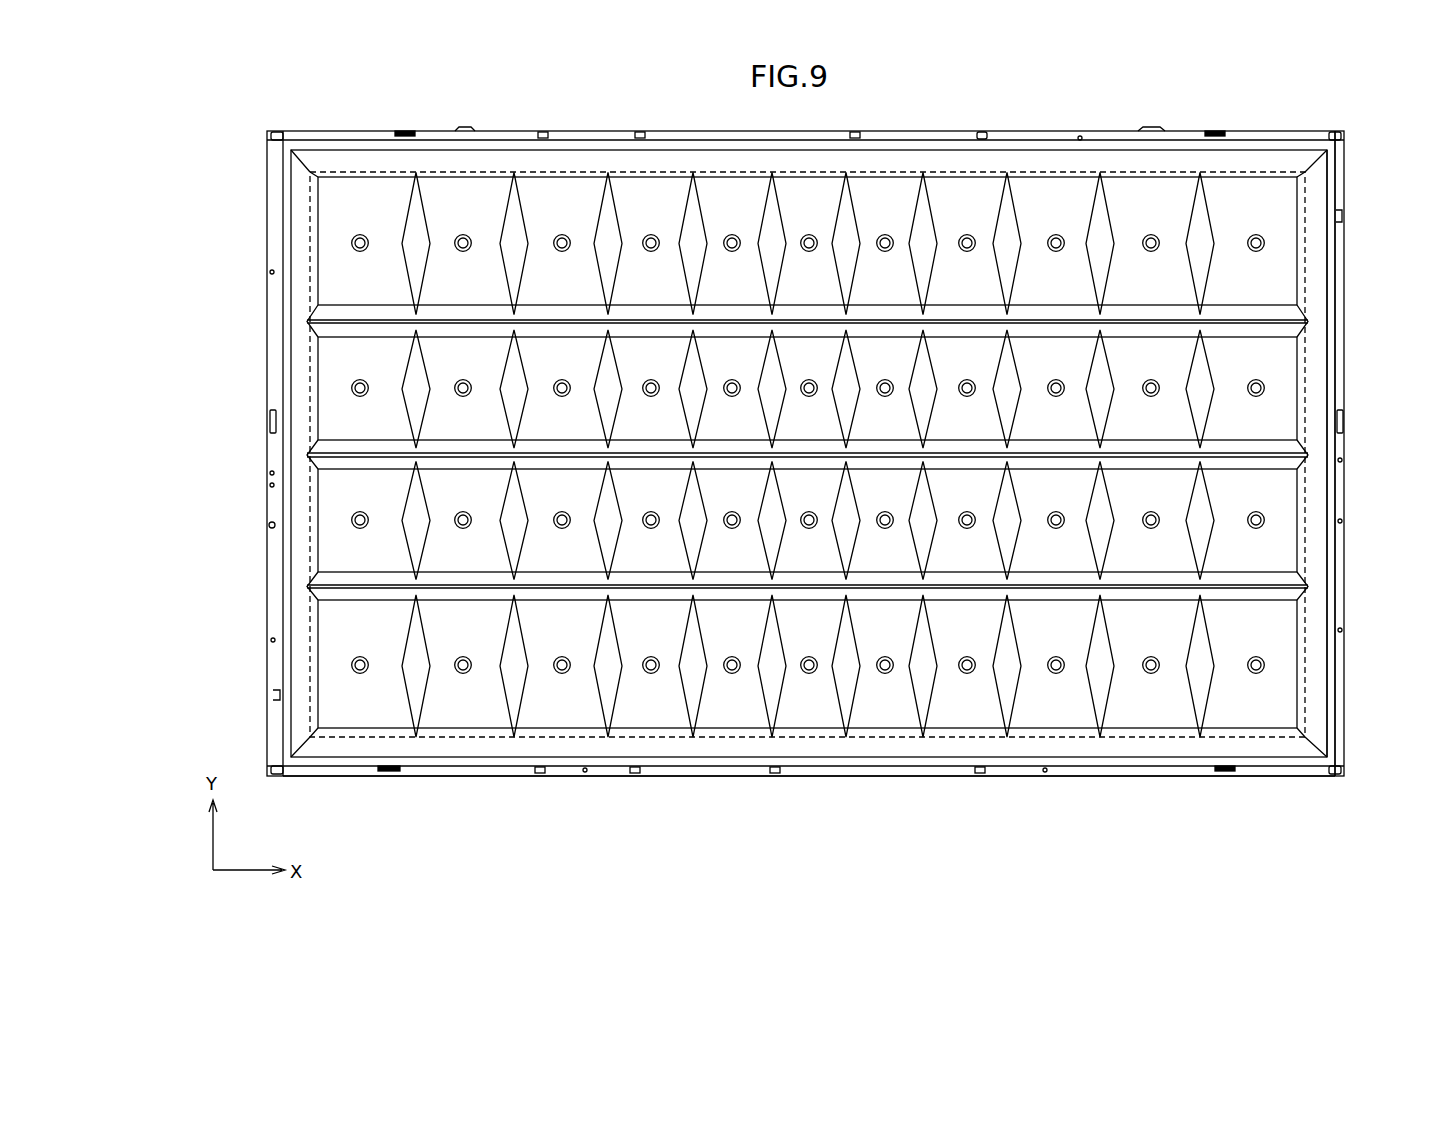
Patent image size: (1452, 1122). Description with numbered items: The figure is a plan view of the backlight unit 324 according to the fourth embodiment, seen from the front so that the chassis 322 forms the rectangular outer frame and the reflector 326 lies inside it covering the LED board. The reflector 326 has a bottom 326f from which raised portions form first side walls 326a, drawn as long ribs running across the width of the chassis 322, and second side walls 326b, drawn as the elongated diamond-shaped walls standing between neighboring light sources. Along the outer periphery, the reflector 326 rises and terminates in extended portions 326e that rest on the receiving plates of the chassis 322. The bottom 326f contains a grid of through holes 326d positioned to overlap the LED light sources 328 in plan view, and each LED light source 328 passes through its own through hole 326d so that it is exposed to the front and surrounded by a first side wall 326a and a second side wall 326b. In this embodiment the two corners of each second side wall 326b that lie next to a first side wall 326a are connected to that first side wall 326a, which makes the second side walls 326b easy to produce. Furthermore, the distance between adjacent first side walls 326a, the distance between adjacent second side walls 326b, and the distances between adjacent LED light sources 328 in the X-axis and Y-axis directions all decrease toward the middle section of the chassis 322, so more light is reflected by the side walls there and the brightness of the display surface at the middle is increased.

The chassis 322 is at (1344, 712).
The backlight unit 324 is at (811, 806).
The reflector 326 is at (1337, 621).
The first side wall 326a is at (343, 580).
The second side wall 326b is at (512, 543).
The through hole 326d is at (651, 243).
The extended portion 326e is at (1330, 562).
The bottom 326f is at (720, 712).
The LED light source 328 is at (652, 672).